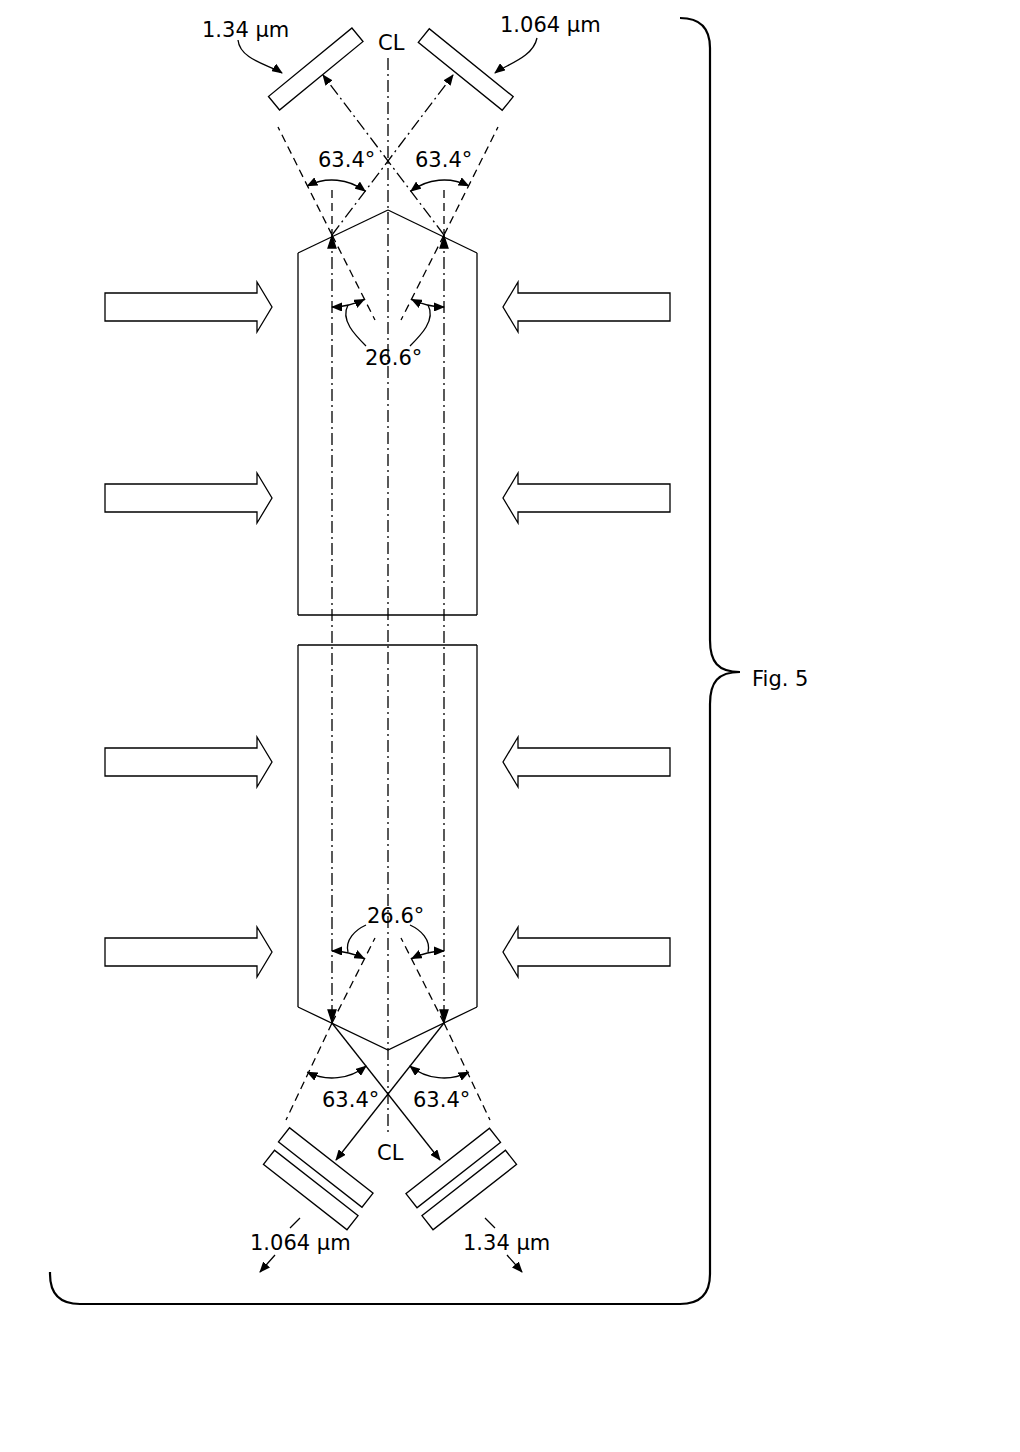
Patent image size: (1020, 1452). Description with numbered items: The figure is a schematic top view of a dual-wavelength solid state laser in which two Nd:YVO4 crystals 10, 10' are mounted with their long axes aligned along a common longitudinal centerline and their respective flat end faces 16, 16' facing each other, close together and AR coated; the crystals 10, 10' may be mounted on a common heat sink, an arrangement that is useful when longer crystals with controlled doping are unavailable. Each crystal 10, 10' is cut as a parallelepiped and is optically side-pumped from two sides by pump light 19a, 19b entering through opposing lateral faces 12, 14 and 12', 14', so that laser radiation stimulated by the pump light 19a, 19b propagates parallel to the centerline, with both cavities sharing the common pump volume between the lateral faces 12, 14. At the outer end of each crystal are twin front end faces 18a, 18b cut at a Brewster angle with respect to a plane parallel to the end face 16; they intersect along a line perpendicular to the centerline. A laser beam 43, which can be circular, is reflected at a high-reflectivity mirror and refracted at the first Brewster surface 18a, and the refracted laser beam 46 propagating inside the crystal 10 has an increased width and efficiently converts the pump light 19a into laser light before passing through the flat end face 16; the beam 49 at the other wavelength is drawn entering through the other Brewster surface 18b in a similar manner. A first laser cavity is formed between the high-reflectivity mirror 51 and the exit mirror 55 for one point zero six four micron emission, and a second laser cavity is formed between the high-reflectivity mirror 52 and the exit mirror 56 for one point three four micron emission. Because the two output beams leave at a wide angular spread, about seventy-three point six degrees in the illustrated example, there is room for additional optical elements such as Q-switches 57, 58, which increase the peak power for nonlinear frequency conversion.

The Nd:YVO4 crystal 10 is at (437, 408).
The second Nd:YVO4 crystal 10' is at (432, 845).
The lateral face 12 is at (515, 434).
The lateral face of second crystal 12' is at (507, 826).
The lateral face 14 is at (272, 434).
The lateral face of second crystal 14' is at (265, 826).
The rear end face 16 is at (415, 603).
The flat end face of second crystal 16' is at (420, 653).
The front end face 18a is at (460, 245).
The front end face 18b is at (308, 249).
The pump light 19a is at (622, 293).
The pump light 19b is at (135, 322).
The laser beam 43 is at (345, 107).
The 1.064 micron beam path 49 is at (417, 125).
The refracted laser beam 46 is at (445, 373).
The Q-switch 58 is at (330, 380).
The high-reflectivity mirror 51 is at (277, 103).
The high-reflectivity mirror 52 is at (505, 103).
The exit mirror 55 is at (265, 1150).
The exit mirror 56 is at (515, 1152).
The Q-switch 57 is at (280, 1128).